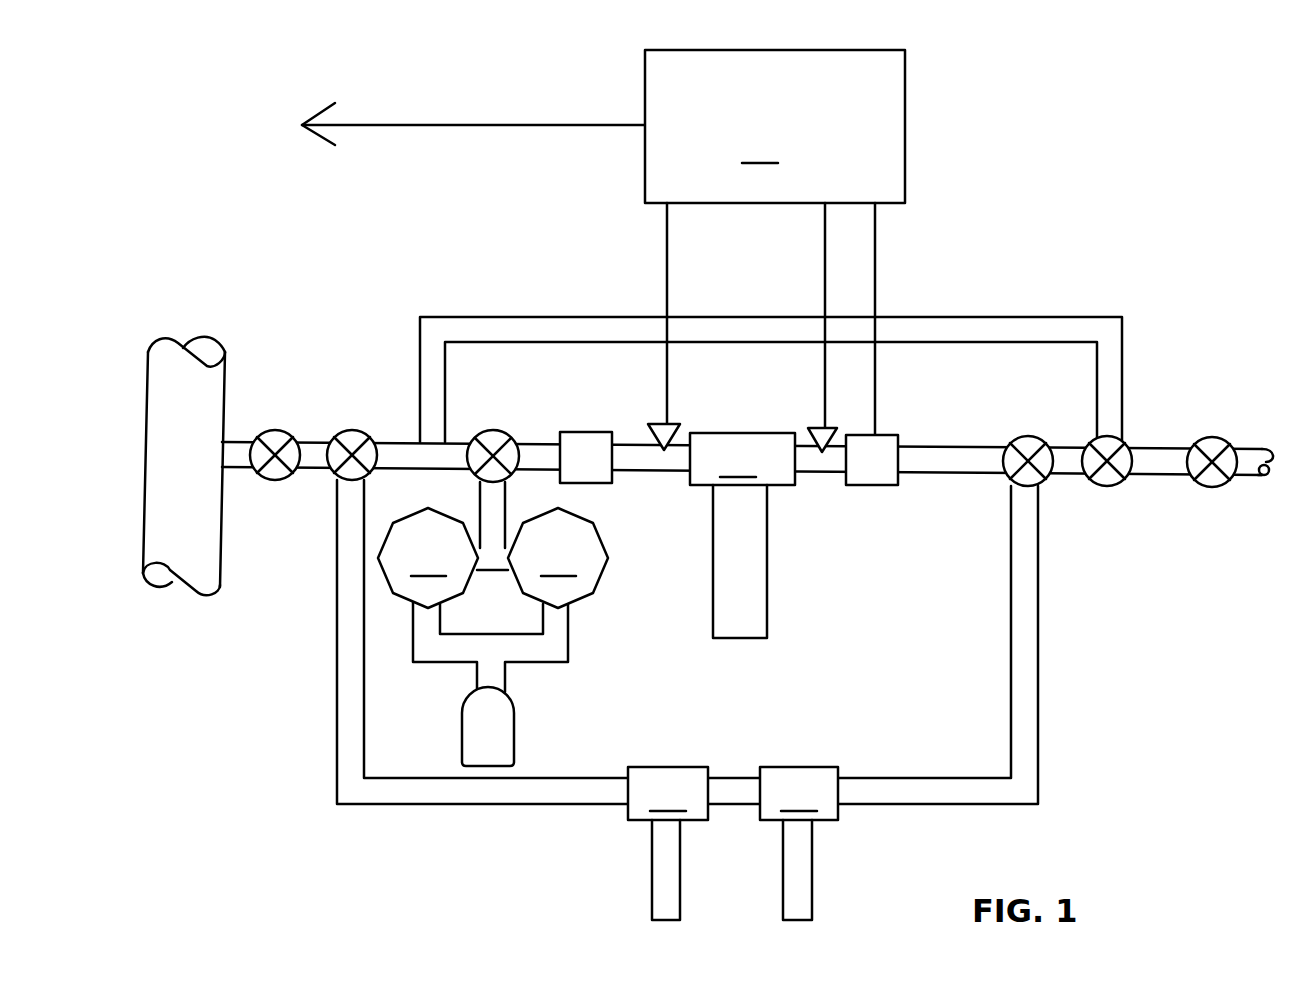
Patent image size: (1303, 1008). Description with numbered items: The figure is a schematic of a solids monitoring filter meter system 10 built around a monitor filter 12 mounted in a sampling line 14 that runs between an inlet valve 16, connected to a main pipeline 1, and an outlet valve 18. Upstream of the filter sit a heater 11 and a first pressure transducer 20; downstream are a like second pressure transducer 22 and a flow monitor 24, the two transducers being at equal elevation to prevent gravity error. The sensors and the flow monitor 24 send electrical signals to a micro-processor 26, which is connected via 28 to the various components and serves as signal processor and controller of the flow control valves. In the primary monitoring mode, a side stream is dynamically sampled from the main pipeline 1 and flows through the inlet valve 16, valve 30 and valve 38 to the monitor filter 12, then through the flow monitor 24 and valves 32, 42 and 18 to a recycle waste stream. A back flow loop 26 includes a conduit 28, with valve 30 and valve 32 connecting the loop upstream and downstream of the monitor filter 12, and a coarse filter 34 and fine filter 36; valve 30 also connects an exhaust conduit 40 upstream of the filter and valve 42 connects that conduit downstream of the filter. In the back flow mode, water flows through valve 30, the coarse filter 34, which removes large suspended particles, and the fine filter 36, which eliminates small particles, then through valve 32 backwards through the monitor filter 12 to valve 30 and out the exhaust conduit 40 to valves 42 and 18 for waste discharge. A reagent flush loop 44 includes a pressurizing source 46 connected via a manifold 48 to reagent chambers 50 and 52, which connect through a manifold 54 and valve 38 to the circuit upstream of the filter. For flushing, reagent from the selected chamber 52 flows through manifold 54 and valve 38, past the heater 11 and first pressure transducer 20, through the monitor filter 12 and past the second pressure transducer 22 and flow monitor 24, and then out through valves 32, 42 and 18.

The main pipeline 1 is at (220, 543).
The solids monitoring filter meter system 10 is at (590, 270).
The heater 11 is at (577, 430).
The monitor filter 12 is at (742, 535).
The sampling line 14 is at (447, 468).
The inlet valve 16 is at (288, 477).
The outlet valve 18 is at (1200, 485).
The first pressure transducer 20 is at (657, 427).
The second pressure transducer 22 is at (818, 425).
The flow monitor 24 is at (875, 488).
The back flow loop 26 is at (855, 767).
The conduit 28 is at (523, 125).
The valve 30 is at (337, 435).
The valve 32 is at (1015, 440).
The coarse filter 34 is at (668, 843).
The fine filter 36 is at (799, 843).
The valve 38 is at (488, 433).
The exhaust conduit 40 is at (560, 317).
The valve 42 is at (1113, 487).
The reagent flush loop 44 is at (432, 670).
The pressurizing source 46 is at (515, 727).
The manifold 48 is at (507, 663).
The reagent chamber 50 is at (428, 558).
The reagent chamber 52 is at (558, 558).
The manifold 54 is at (507, 502).